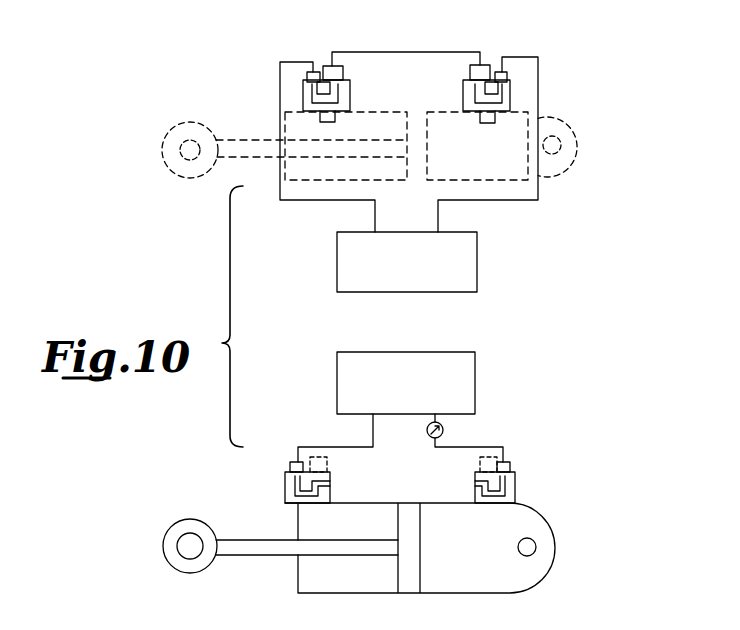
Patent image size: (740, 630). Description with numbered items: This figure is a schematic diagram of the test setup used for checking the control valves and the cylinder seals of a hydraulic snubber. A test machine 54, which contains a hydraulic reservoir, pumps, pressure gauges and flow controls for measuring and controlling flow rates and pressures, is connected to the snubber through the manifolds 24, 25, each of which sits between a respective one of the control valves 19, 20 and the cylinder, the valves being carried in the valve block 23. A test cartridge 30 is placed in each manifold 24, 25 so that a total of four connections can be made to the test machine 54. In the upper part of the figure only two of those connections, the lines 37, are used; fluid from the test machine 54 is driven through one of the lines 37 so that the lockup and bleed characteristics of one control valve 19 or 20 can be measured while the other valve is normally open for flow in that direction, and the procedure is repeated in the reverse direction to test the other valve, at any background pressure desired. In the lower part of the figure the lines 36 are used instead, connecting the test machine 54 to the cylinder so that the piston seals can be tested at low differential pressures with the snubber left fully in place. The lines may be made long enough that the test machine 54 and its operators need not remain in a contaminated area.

The control valve 19 is at (328, 66).
The control valve 20 is at (484, 65).
The housing 23 is at (422, 50).
The manifold 24 is at (343, 104).
The manifold 25 is at (467, 104).
The test cartridge 30 is at (312, 72).
The lines 36 is at (308, 446).
The lines 37 is at (280, 104).
The test machine 54 is at (477, 275).